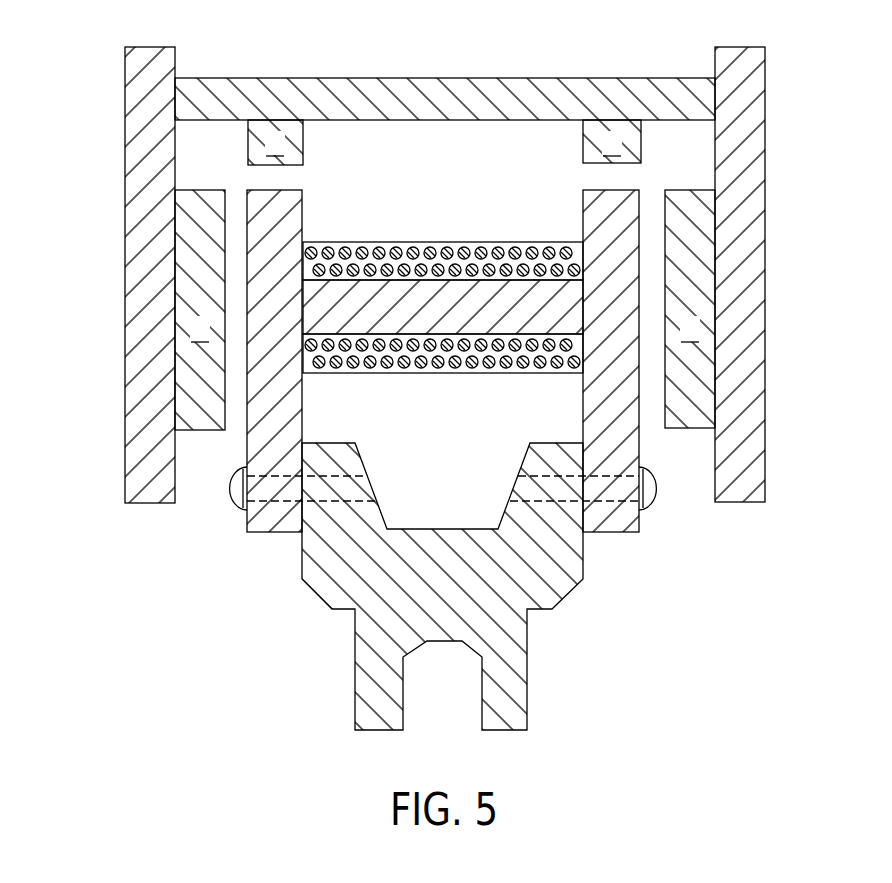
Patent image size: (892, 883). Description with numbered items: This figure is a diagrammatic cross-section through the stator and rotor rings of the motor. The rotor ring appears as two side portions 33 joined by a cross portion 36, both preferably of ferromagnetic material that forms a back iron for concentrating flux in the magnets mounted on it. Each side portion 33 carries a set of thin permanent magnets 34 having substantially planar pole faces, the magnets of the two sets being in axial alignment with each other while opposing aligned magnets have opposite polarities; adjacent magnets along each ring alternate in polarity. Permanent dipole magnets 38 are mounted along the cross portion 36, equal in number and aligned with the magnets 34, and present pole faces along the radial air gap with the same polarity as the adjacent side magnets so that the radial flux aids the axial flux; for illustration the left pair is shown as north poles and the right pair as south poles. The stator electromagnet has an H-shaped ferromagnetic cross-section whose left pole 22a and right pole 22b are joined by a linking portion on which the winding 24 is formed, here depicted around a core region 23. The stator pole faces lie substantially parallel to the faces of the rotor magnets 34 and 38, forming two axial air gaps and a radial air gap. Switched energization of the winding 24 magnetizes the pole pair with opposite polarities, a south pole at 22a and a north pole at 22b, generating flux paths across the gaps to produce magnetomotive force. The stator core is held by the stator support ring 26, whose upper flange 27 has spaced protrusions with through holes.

The left stator pole 22a is at (303, 212).
The right stator pole 22b is at (583, 201).
The bobbin / coil core 23 is at (417, 336).
The winding 24 is at (457, 242).
The stator support ring 26 is at (528, 665).
The upper flange 27 is at (366, 460).
The side portions 33 is at (125, 290).
The permanent magnets 34 is at (201, 190).
The cross portion 36 is at (455, 78).
The permanent dipole magnets 38 is at (303, 151).